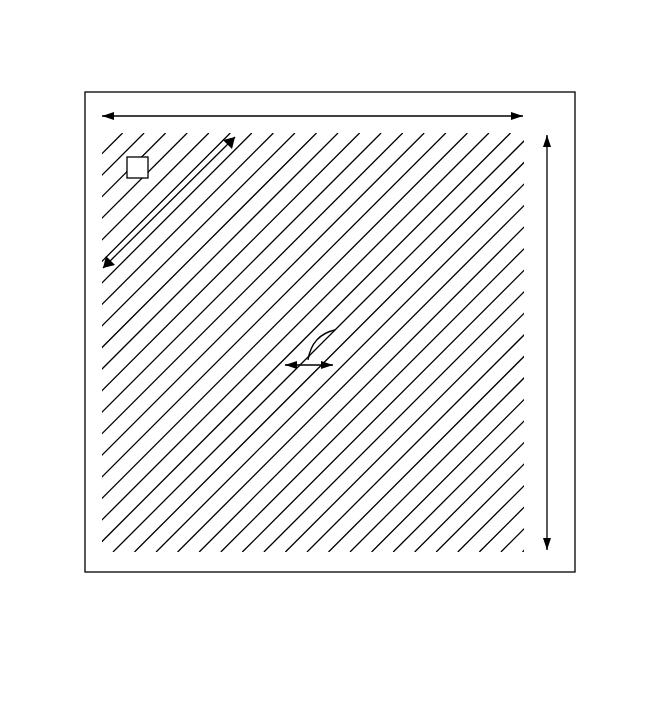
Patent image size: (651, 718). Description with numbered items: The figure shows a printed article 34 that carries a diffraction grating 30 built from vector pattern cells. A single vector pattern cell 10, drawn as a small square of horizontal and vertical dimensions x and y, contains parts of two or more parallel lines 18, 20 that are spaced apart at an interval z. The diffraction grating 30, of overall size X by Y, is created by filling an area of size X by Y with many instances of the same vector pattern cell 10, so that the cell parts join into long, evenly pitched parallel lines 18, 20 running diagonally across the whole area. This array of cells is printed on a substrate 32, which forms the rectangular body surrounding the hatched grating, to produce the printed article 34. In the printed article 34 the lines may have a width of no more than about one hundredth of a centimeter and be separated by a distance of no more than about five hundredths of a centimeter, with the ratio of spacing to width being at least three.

The vector pattern cell 10 is at (138, 157).
The parallel line 18 is at (113, 185).
The parallel line 20 is at (108, 212).
The diffraction grating 30 is at (100, 292).
The substrate 32 is at (85, 387).
The printed article 34 is at (545, 71).